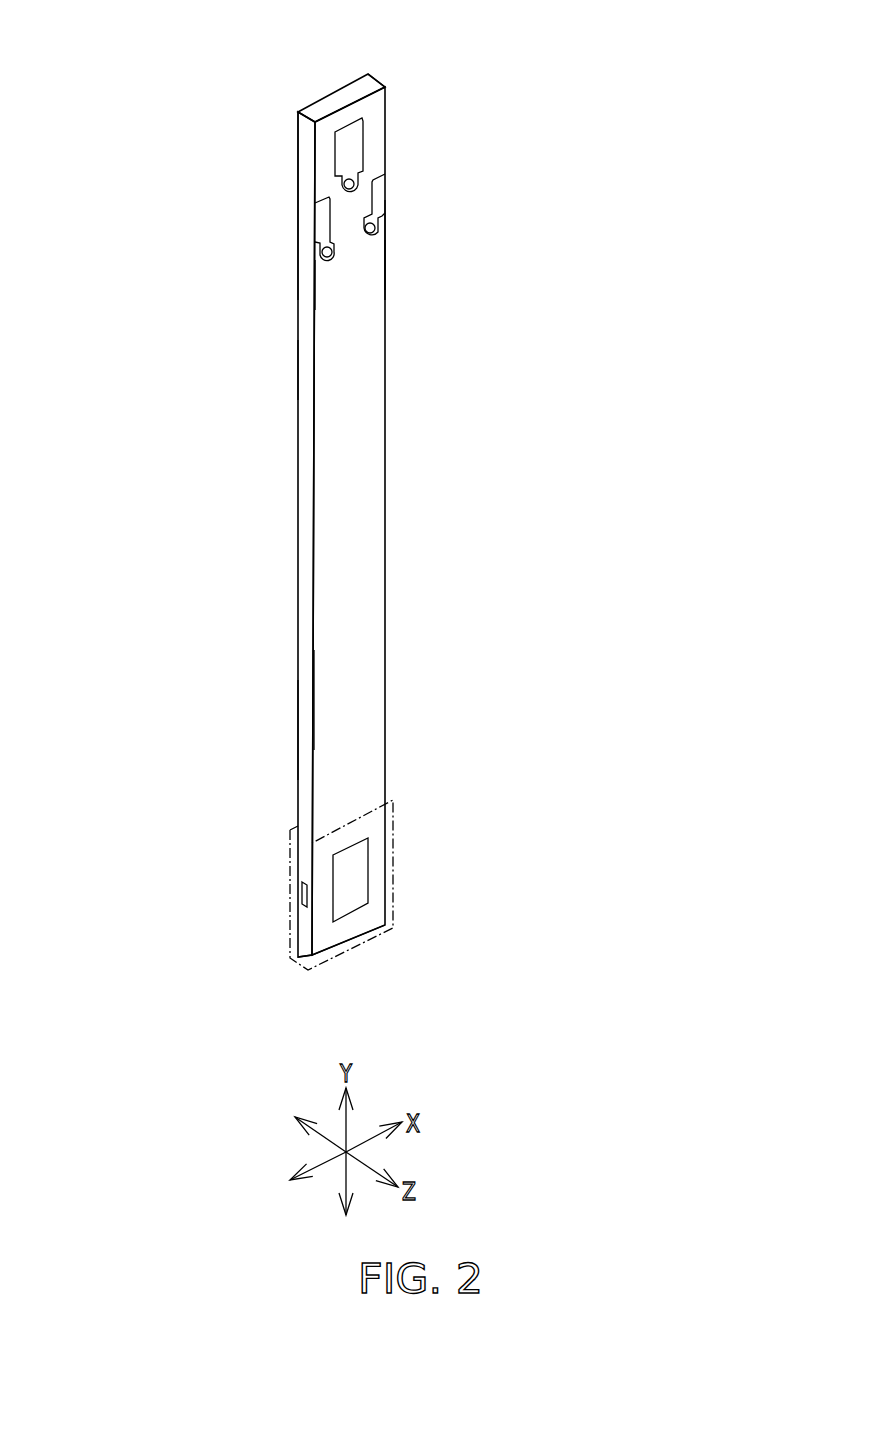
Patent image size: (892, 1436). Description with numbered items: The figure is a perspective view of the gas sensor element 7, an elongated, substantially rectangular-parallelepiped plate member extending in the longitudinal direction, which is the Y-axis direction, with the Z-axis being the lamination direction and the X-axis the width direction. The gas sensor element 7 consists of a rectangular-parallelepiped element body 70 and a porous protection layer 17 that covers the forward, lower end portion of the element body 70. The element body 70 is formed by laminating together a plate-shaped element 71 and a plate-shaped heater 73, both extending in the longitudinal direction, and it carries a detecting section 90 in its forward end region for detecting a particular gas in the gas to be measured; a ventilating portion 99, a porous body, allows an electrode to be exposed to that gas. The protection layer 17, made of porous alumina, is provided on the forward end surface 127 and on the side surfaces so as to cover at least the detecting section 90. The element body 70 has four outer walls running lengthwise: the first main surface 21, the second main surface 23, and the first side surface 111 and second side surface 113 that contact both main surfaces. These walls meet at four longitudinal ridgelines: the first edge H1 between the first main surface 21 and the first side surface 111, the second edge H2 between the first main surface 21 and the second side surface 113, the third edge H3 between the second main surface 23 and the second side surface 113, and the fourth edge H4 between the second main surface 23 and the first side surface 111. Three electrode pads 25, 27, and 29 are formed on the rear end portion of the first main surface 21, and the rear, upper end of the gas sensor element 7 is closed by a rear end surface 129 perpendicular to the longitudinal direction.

The gas sensor element 7 is at (455, 438).
The porous protection layer 17 is at (390, 815).
The first main surface 21 is at (358, 702).
The second main surface 23 is at (277, 736).
The electrode pad 25 is at (322, 227).
The electrode pad 27 is at (360, 152).
The electrode pad 29 is at (380, 193).
The element body 70 is at (323, 522).
The plate-shaped element 71 is at (352, 573).
The plate-shaped heater 73 is at (297, 607).
The detecting section 90 is at (275, 903).
The ventilating portion 99 is at (353, 875).
The first side surface 111 is at (307, 367).
The second side surface 113 is at (387, 233).
The forward end surface 127 is at (362, 950).
The rear end surface 129 is at (332, 103).
The first edge H1 is at (315, 283).
The second edge H2 is at (387, 263).
The third edge H3 is at (378, 60).
The fourth edge H4 is at (288, 132).